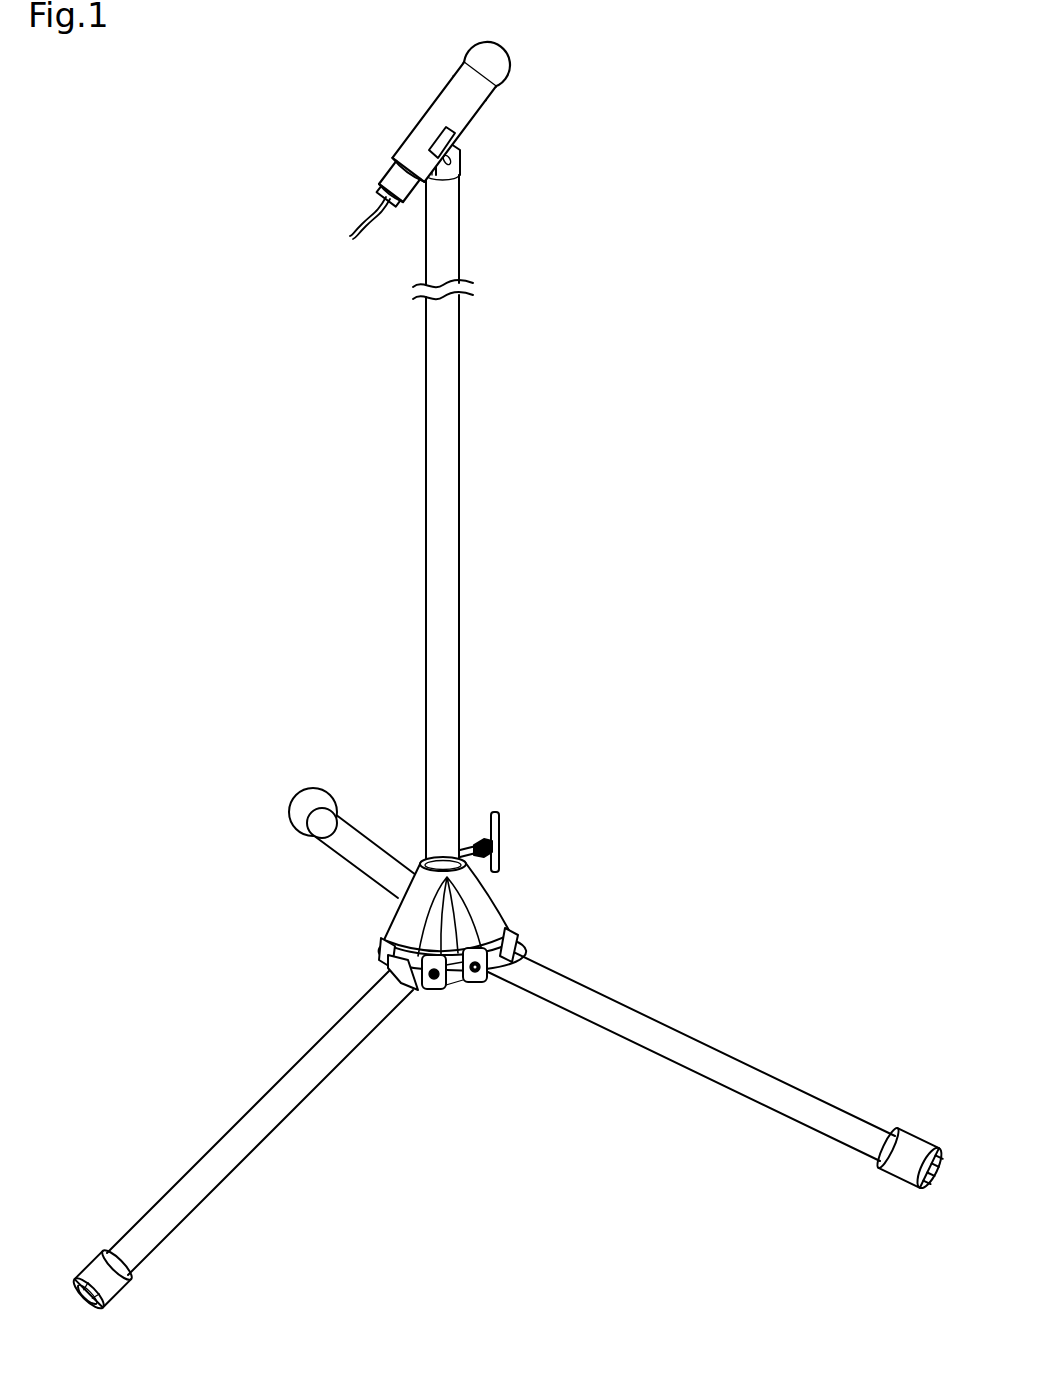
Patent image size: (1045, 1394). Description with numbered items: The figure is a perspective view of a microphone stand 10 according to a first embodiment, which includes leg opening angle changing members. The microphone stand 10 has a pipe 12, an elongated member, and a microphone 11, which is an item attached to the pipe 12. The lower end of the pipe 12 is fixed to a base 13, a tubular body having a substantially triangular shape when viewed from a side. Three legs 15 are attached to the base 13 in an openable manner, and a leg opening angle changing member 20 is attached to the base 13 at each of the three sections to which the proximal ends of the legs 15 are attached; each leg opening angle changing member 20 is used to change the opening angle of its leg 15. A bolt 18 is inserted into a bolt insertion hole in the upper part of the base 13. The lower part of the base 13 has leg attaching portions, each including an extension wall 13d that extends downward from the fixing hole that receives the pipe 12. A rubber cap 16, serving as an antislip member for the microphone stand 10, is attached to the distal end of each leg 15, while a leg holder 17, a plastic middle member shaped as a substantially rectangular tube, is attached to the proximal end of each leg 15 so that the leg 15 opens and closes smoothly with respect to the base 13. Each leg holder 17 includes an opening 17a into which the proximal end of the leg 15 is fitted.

The microphone stand 10 is at (538, 224).
The microphone 11 is at (512, 72).
The pipe 12 is at (430, 382).
The base 13 is at (386, 917).
The extension wall 13d is at (407, 893).
The leg 15 is at (352, 828).
The rubber cap 16 is at (292, 800).
The leg holder 17 is at (412, 990).
The opening 17a is at (405, 985).
The bolt 18 is at (512, 822).
The leg opening angle changing member 20 is at (510, 930).